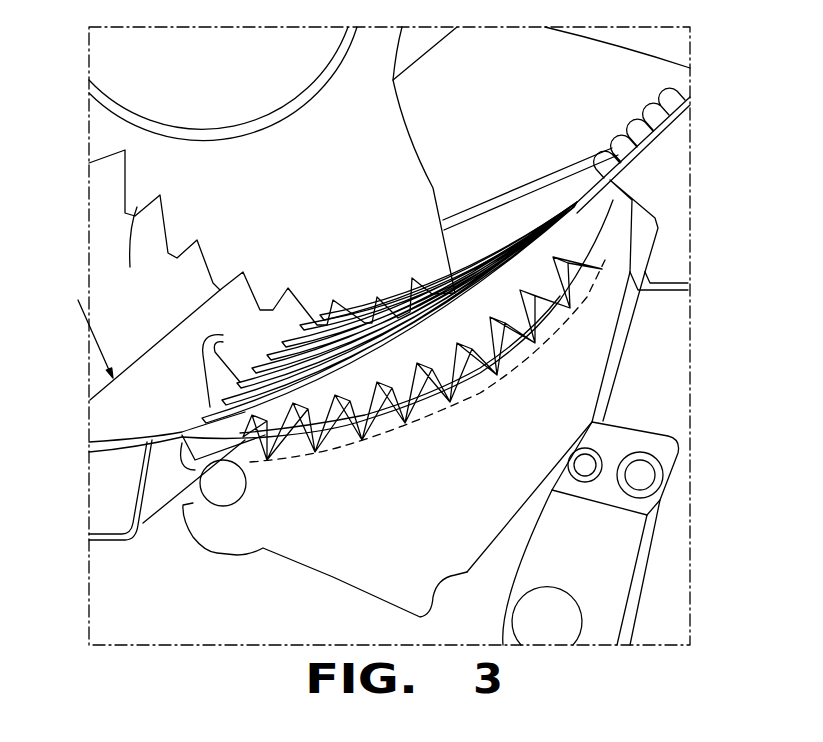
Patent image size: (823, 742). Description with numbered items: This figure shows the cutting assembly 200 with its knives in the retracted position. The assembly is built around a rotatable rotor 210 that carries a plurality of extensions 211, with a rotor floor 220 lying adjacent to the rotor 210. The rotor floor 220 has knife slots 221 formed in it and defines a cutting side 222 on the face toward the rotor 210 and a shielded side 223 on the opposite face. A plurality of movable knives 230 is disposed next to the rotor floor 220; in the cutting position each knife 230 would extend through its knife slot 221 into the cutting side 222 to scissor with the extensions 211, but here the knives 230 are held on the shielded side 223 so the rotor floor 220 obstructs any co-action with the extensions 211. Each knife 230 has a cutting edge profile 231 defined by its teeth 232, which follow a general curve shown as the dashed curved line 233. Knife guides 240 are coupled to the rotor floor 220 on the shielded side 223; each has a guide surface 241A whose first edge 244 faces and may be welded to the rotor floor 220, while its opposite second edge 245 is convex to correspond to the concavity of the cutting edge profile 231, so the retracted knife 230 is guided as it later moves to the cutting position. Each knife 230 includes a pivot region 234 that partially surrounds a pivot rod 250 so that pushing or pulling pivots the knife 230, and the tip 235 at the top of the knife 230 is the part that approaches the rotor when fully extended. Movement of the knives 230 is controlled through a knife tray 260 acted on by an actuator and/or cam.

The cutting assembly 200 is at (140, 588).
The rotatable rotor 210 is at (356, 68).
The extensions 211 is at (215, 274).
The rotor floor 220 is at (170, 416).
The knife slots 221 is at (235, 365).
The cutting side 222 is at (73, 323).
The shielded side 223 is at (154, 535).
The knives 230 is at (465, 558).
The cutting edge profile 231 is at (469, 419).
The teeth 232 is at (422, 385).
The curved line 233 is at (583, 296).
The pivot region 234 is at (233, 527).
The tip 235 is at (598, 160).
The knife guides 240 is at (418, 352).
The guide surface 241A is at (441, 289).
The first edge 244 is at (542, 335).
The second edge 245 is at (405, 440).
The pivot rod 250 is at (235, 492).
The knife tray 260 is at (665, 624).